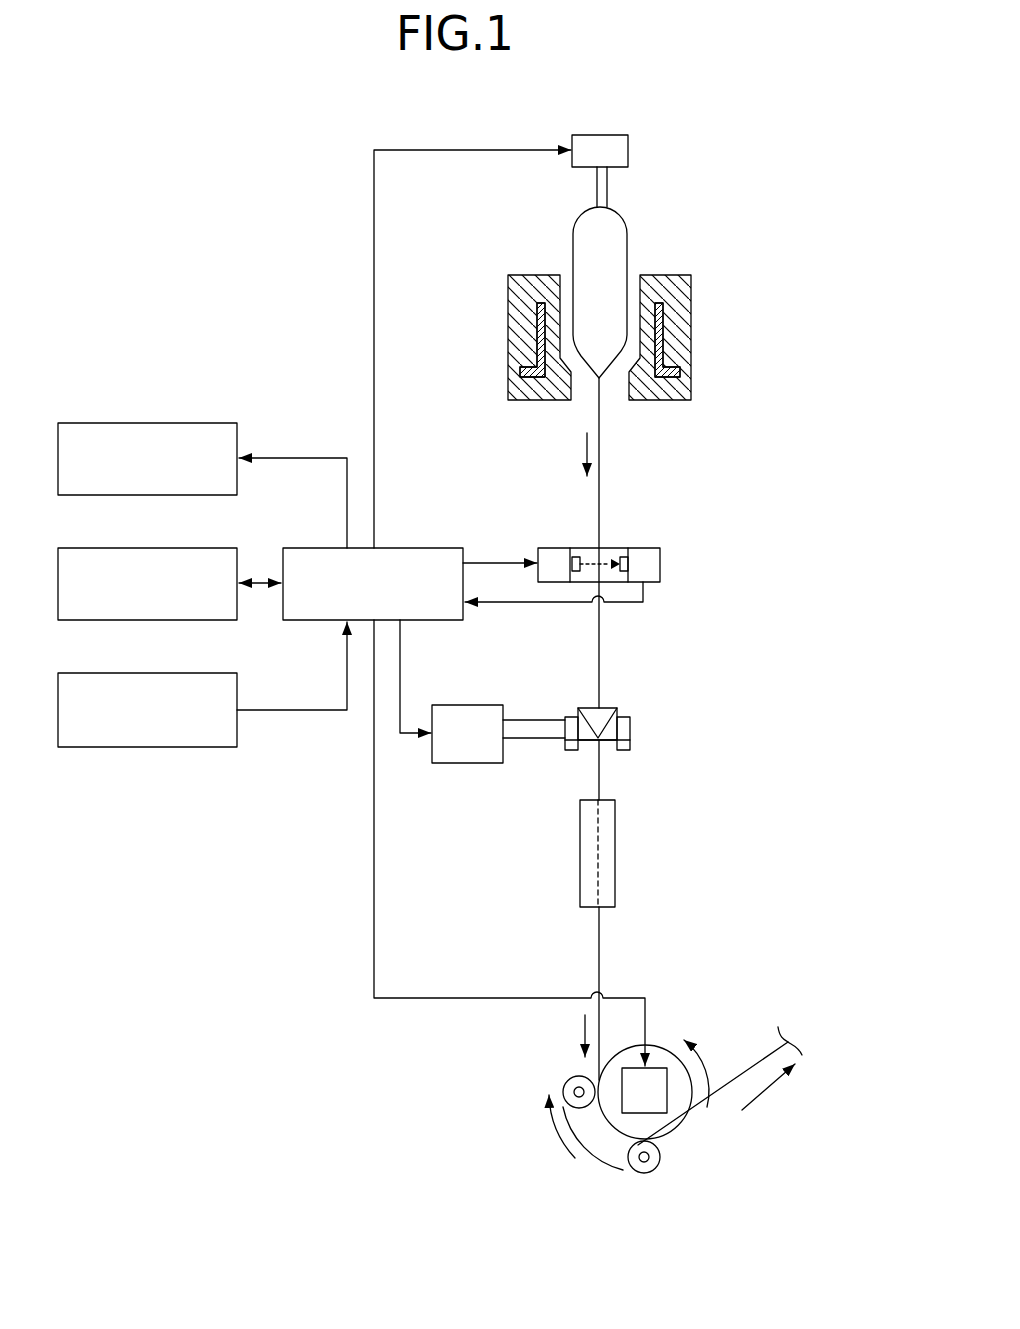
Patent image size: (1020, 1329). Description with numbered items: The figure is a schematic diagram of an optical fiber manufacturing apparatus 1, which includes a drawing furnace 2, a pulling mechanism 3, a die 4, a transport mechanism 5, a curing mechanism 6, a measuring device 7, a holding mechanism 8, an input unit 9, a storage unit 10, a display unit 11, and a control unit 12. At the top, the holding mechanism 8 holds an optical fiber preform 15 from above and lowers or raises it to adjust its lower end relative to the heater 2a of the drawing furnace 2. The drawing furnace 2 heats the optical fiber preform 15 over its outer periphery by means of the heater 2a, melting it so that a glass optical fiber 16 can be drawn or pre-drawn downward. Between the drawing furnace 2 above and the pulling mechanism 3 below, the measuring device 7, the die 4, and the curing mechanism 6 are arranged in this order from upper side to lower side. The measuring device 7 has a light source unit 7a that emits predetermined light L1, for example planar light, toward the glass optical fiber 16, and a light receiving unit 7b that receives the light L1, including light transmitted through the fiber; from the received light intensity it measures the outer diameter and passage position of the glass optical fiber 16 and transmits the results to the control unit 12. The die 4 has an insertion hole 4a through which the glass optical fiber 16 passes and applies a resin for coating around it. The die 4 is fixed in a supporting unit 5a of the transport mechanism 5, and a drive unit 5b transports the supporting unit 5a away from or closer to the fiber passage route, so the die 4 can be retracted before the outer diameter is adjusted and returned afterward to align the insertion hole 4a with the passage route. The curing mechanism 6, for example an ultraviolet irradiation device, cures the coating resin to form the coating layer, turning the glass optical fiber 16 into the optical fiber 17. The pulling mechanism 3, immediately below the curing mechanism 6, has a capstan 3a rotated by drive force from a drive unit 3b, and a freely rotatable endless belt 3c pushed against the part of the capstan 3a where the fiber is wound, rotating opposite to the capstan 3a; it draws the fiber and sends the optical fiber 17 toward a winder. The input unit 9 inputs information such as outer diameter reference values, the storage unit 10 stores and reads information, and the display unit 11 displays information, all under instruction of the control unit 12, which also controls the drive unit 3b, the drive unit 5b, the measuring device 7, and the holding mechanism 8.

The optical fiber manufacturing apparatus 1 is at (775, 149).
The drawing furnace 2 is at (636, 337).
The heater 2a is at (663, 316).
The pulling mechanism 3 is at (675, 1075).
The capstan 3a is at (665, 1043).
The drive unit 3b is at (652, 1117).
The endless belt 3c is at (620, 1170).
The die 4 is at (603, 697).
The insertion hole 4a is at (600, 724).
The transport mechanism 5 is at (568, 741).
The supporting unit 5a is at (630, 728).
The drive unit 5b is at (470, 765).
The curing mechanism 6 is at (615, 853).
The measuring device 7 is at (599, 548).
The light source unit 7a is at (555, 548).
The light receiving unit 7b is at (660, 563).
The holding mechanism 8 is at (628, 151).
The input unit 9 is at (150, 673).
The storage unit 10 is at (150, 548).
The display unit 11 is at (150, 423).
The control unit 12 is at (405, 548).
The optical fiber preform 15 is at (628, 243).
The glass optical fiber 16 is at (600, 437).
The optical fiber 17 is at (597, 937).
The light L1 is at (592, 562).